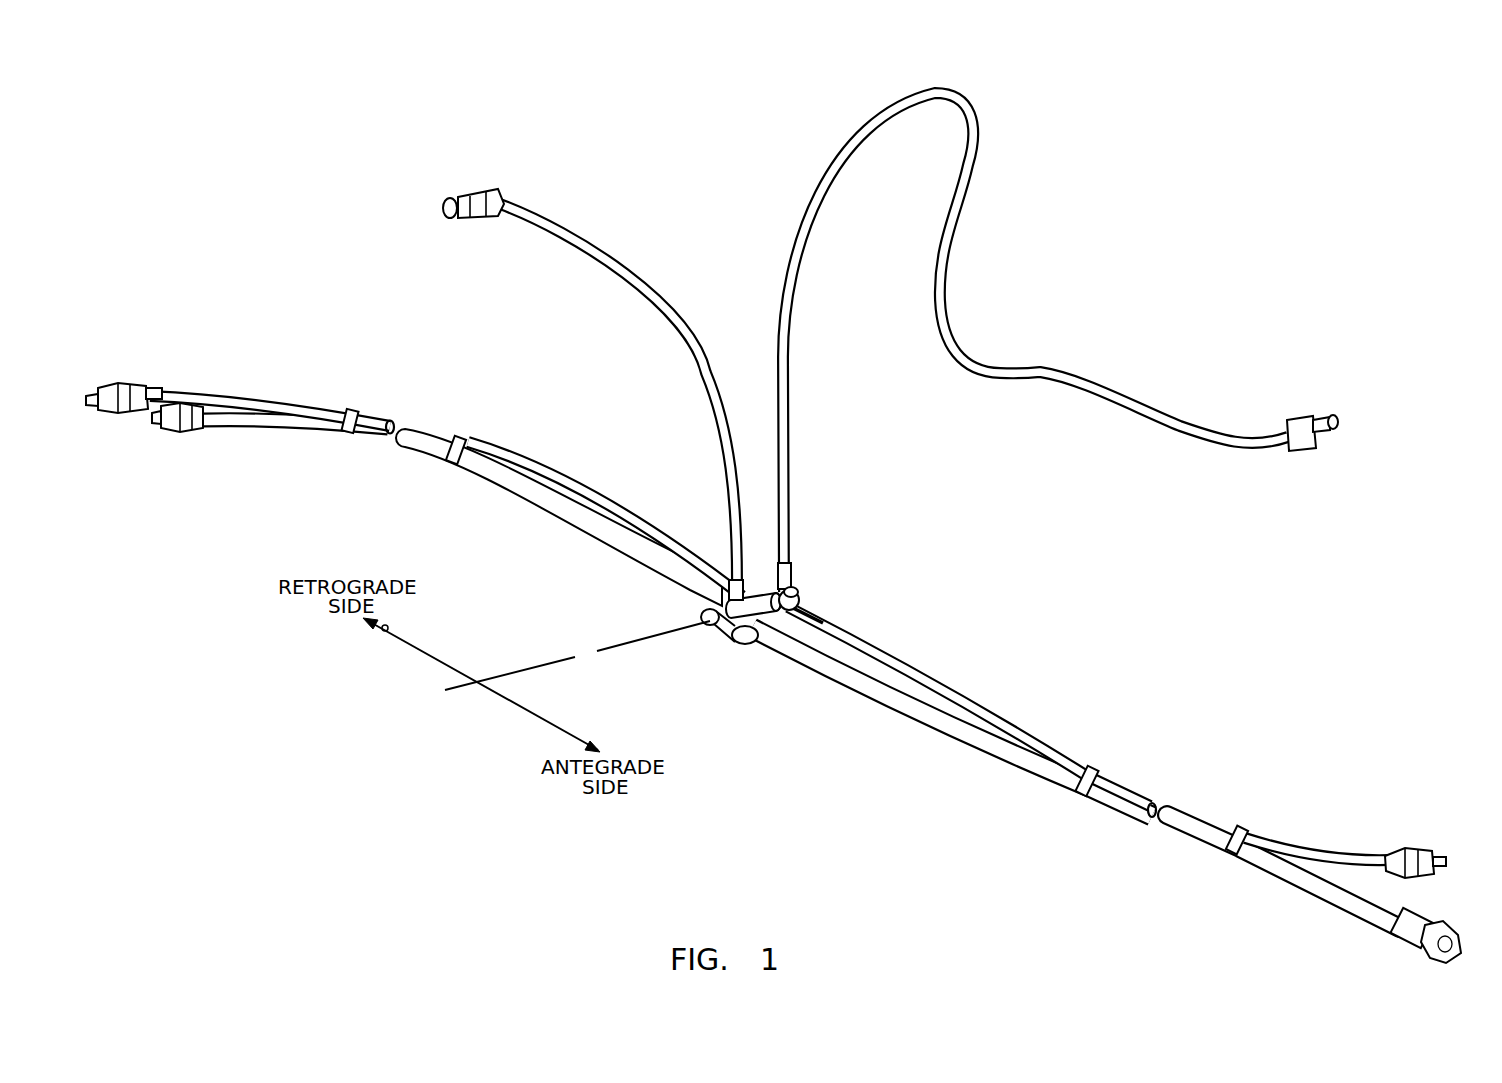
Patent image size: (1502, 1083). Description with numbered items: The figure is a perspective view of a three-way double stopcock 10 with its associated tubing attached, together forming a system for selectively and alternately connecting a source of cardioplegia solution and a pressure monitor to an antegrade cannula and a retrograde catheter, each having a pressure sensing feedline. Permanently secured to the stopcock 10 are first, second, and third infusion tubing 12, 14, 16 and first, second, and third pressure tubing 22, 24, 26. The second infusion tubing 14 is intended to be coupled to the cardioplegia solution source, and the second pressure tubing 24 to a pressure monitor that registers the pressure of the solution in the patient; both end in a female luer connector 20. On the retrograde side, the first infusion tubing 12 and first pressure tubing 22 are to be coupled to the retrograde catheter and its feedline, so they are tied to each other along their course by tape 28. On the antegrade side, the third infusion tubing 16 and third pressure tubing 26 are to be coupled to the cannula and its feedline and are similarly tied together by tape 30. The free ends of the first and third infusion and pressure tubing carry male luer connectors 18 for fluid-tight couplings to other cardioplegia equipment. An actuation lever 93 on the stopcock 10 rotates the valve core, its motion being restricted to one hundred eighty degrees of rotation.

The three-way double stopcock 10 is at (812, 590).
The first infusion tubing 12 is at (290, 414).
The second infusion tubing 14 is at (702, 373).
The third infusion tubing 16 is at (858, 682).
The male luer connector 18 is at (131, 420).
The female luer connector 20 is at (458, 183).
The first pressure tubing 22 is at (240, 396).
The second pressure tubing 24 is at (944, 340).
The third pressure tubing 26 is at (968, 700).
The tape 28 is at (452, 450).
The tape 30 is at (1095, 772).
The actuation lever 93 is at (742, 642).